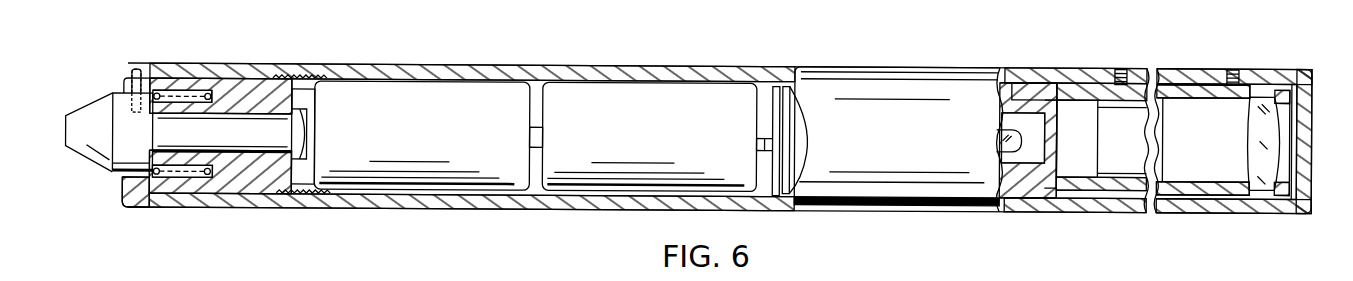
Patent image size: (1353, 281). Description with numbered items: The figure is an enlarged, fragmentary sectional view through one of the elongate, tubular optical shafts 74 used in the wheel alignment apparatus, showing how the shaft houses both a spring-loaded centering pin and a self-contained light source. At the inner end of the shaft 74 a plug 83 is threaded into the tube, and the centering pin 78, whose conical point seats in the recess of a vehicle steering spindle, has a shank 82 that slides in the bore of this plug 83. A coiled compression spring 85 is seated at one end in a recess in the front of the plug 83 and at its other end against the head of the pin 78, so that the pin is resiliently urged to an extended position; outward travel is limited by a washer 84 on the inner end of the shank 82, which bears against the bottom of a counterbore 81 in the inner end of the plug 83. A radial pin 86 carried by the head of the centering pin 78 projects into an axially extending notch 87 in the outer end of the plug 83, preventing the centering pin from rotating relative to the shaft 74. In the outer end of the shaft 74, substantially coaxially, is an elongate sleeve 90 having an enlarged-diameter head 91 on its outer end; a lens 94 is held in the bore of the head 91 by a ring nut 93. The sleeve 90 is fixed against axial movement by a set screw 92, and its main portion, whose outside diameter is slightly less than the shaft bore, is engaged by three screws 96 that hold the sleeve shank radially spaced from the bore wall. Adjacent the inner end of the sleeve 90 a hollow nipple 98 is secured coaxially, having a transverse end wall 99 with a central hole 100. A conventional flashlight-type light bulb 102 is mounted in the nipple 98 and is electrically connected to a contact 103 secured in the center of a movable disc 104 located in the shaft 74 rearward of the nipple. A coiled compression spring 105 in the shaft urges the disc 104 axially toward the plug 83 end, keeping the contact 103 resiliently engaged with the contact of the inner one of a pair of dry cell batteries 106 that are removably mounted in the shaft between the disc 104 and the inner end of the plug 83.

The tubular optical shaft 74 is at (629, 79).
The centering pin 78 is at (81, 108).
The counterbore 81 is at (305, 98).
The shank 82 is at (250, 142).
The plug 83 is at (245, 82).
The washer 84 is at (315, 195).
The coiled compression spring 85 is at (202, 180).
The radial pin 86 is at (141, 70).
The axially extending notch 87 is at (124, 65).
The elongate sleeve 90 is at (1135, 88).
The enlarged-diameter head 91 is at (1222, 83).
The set screw 92 is at (1248, 68).
The ring nut 93 is at (1287, 175).
The lens 94 is at (1275, 142).
The screws 96 is at (1113, 70).
The hollow nipple 98 is at (1025, 162).
The transverse end wall 99 is at (1058, 155).
The central hole 100 is at (1058, 133).
The light bulb 102 is at (1013, 123).
The contact 103 is at (768, 120).
The movable disc 104 is at (787, 83).
The coiled compression spring 105 is at (795, 88).
The dry cell batteries 106 is at (582, 153).